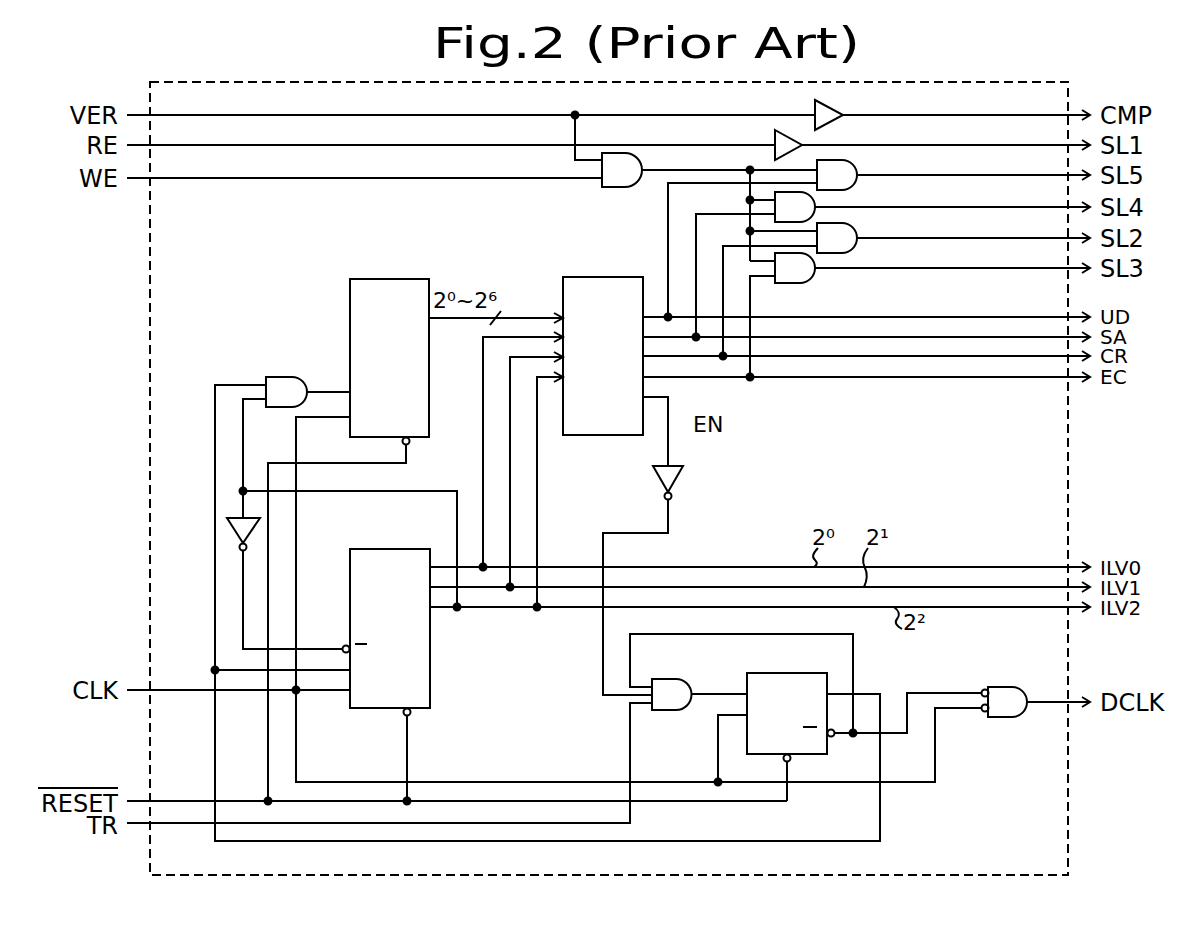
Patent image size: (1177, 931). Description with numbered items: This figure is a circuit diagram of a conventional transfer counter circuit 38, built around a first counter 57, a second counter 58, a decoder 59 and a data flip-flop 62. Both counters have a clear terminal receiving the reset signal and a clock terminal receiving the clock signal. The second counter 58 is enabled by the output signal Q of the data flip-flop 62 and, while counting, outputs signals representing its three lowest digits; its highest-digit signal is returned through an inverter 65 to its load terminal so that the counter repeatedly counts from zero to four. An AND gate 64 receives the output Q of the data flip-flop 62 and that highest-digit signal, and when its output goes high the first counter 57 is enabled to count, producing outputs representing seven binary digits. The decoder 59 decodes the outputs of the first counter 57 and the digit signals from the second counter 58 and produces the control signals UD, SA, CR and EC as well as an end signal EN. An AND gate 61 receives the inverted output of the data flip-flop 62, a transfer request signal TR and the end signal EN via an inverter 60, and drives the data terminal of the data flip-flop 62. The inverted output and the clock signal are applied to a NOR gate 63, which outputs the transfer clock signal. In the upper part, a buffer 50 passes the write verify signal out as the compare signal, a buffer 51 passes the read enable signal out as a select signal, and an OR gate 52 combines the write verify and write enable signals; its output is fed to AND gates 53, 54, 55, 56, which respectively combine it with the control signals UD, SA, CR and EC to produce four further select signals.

The transfer counter circuit 38 is at (1068, 483).
The buffer 50 is at (815, 108).
The buffer 51 is at (775, 138).
The OR gate 52 is at (615, 188).
The AND gate 53 is at (838, 160).
The AND gate 54 is at (816, 201).
The AND gate 55 is at (836, 224).
The AND gate 56 is at (805, 283).
The first counter 57 is at (350, 292).
The second counter 58 is at (376, 551).
The decoder 59 is at (563, 288).
The inverter 60 is at (678, 478).
The AND gate 61 is at (666, 679).
The data flip-flop 62 is at (765, 673).
The NOR gate 63 is at (1000, 687).
The AND gate 64 is at (279, 377).
The inverter 65 is at (227, 529).